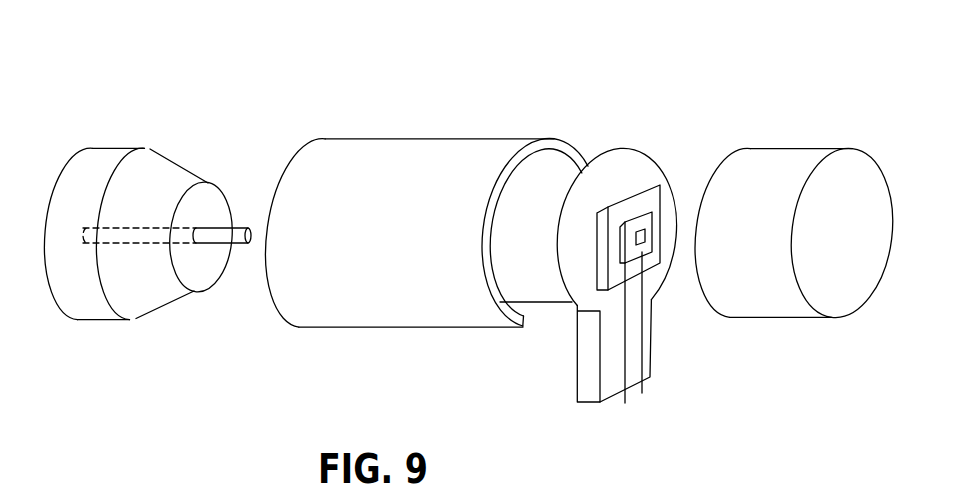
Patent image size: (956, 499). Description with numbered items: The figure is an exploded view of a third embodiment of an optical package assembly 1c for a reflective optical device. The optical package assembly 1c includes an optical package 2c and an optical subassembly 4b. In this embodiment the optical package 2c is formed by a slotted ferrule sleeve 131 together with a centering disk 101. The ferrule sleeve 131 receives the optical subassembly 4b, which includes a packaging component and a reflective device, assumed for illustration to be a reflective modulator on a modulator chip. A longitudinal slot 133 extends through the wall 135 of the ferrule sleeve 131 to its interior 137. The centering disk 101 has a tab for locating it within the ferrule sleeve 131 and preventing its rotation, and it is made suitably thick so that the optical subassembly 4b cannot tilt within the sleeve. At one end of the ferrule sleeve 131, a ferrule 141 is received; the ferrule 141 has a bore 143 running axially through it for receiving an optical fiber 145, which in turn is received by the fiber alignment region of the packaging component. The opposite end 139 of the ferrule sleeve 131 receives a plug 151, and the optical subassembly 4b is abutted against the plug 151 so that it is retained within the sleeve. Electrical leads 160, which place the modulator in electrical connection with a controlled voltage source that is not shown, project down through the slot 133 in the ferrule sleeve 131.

The optical package assembly 1c is at (337, 56).
The ferrule 141 is at (110, 158).
The optical fiber 145 is at (238, 232).
The bore 143 is at (97, 237).
The ferrule sleeve 131 is at (400, 155).
The optical package 2c is at (372, 310).
The end of ferrule sleeve 139 is at (528, 150).
The wall 135 is at (489, 301).
The optical subassembly 4b is at (677, 142).
The interior of ferrule sleeve 137 is at (552, 177).
The longitudinal slot 133 is at (548, 318).
The centering disk 101 is at (661, 324).
The electrical leads 160 is at (625, 396).
The plug 151 is at (787, 163).